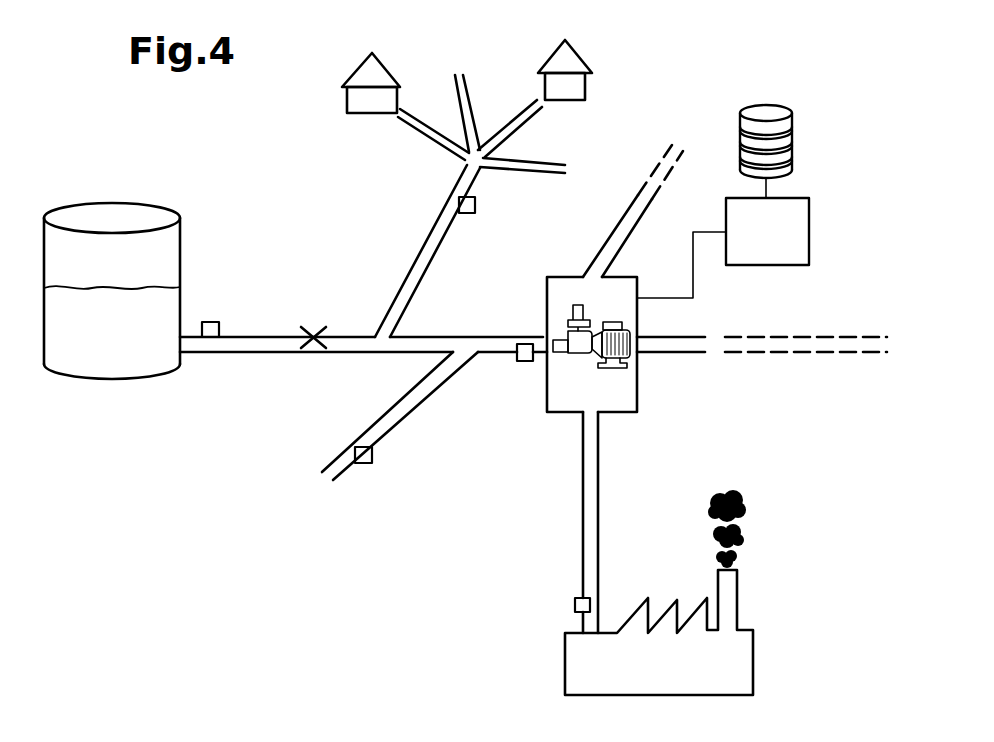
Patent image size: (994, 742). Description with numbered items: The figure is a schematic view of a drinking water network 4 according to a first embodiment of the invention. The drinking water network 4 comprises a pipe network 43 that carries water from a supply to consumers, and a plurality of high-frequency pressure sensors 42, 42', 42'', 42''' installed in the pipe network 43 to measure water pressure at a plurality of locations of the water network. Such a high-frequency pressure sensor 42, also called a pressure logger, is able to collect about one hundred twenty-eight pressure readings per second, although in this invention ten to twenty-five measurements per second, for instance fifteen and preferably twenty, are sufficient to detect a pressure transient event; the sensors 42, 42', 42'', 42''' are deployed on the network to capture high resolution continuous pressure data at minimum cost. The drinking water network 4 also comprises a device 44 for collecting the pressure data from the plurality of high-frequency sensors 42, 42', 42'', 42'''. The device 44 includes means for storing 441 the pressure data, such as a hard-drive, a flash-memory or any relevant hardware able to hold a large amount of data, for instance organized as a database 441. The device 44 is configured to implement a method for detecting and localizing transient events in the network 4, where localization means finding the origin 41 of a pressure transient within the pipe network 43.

The drinking water network 4 is at (771, 170).
The origin 41 is at (313, 327).
The high-frequency pressure sensor 42 is at (227, 290).
The high-frequency pressure sensor 42' is at (503, 388).
The high-frequency pressure sensor 42'' is at (412, 477).
The high-frequency pressure sensor 42''' is at (524, 404).
The pipe network 43 is at (498, 343).
The device for collecting data pressures 44 is at (809, 238).
The means for storing 441 is at (778, 105).